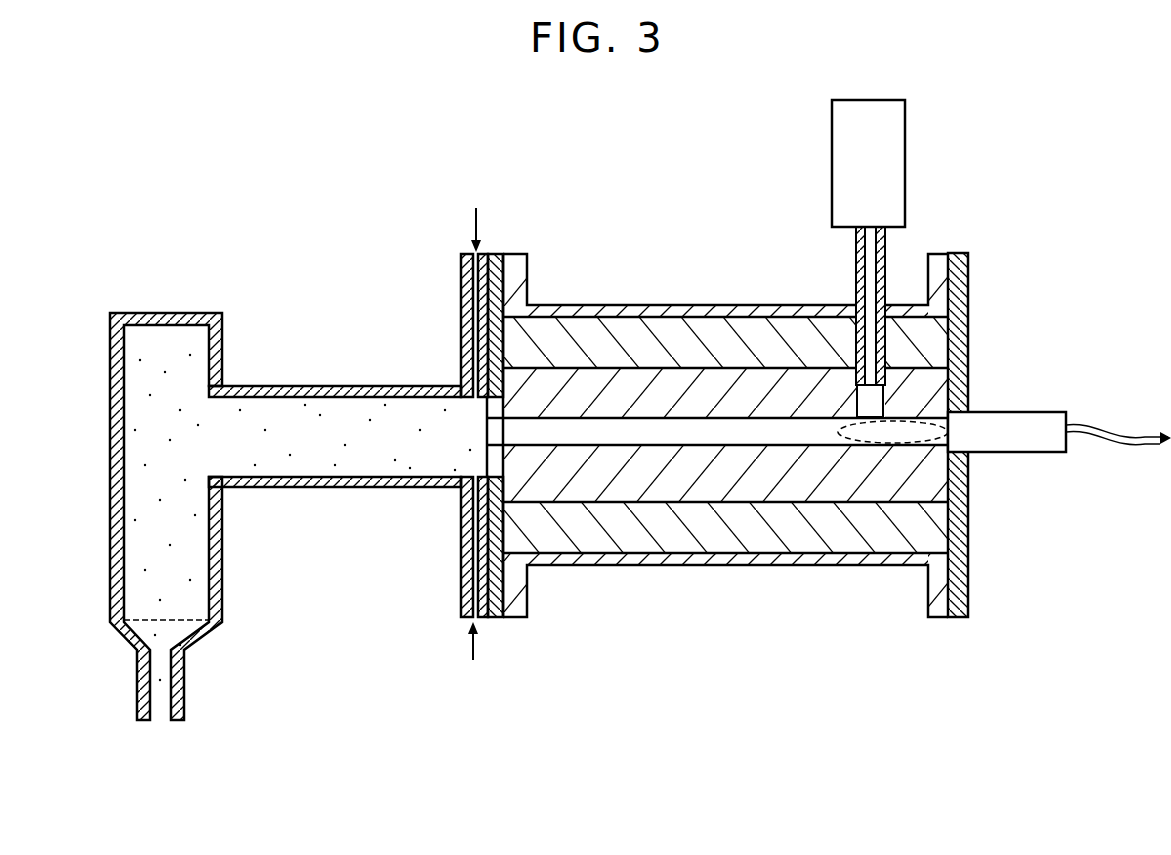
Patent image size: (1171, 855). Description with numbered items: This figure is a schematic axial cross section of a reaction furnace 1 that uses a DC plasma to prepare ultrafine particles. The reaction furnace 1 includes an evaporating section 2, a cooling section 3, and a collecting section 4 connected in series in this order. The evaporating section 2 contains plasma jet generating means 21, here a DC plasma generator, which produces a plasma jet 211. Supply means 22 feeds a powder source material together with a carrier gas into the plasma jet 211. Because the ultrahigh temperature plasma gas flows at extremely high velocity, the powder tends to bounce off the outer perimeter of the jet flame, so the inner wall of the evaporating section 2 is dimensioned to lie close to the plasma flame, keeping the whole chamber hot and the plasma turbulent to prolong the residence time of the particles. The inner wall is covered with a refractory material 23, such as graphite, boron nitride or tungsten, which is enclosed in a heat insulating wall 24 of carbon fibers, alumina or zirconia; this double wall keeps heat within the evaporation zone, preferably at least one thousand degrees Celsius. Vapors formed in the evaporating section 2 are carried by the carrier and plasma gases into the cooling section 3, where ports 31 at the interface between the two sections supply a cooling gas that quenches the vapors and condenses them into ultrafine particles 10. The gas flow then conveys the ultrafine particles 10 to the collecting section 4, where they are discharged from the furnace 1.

The reaction furnace 1 is at (528, 235).
The evaporating section 2 is at (829, 446).
The cooling section 3 is at (368, 470).
The collecting section 4 is at (205, 734).
The ultrafine particles 10 is at (290, 412).
The plasma jet generating means 21 is at (1059, 474).
The supply means 22 is at (905, 150).
The refractory material 23 is at (714, 483).
The heat insulating wall 24 is at (845, 540).
The ports 31 is at (460, 373).
The plasma jet 211 is at (905, 415).